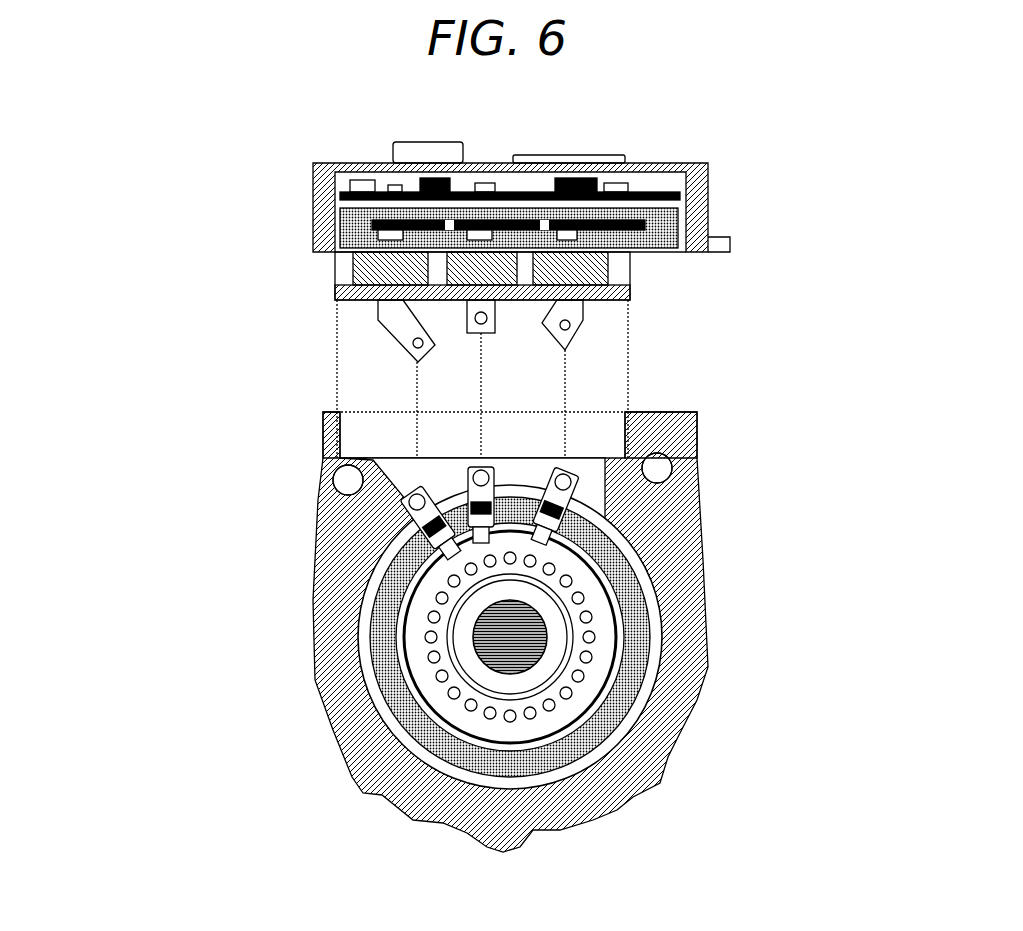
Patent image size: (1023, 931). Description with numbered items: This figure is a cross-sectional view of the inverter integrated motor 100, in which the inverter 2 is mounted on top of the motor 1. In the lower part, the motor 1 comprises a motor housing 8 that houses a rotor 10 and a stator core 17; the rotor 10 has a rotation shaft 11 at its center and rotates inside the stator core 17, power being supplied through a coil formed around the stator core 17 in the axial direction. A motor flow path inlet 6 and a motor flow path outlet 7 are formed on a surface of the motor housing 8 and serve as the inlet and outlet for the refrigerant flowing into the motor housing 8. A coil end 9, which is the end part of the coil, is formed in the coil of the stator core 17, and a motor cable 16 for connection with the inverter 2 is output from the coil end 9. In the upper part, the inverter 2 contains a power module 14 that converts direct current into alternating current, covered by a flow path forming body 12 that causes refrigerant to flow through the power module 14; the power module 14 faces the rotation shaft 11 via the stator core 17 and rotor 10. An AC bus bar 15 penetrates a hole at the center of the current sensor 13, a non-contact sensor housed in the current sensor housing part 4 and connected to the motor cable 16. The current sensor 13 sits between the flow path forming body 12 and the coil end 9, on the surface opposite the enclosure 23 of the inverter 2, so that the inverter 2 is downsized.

The inverter integrated motor 100 is at (185, 113).
The motor 1 is at (620, 576).
The inverter 2 is at (606, 274).
The current sensor housing part 4 is at (364, 430).
The motor flow path inlet 6 is at (657, 470).
The motor flow path outlet 7 is at (343, 480).
The motor housing 8 is at (690, 568).
The coil end 9 is at (611, 637).
The stator core 17 is at (633, 652).
The rotor 10 is at (583, 683).
The rotation shaft 11 is at (517, 655).
The flow path forming body 12 is at (660, 227).
The current sensor 13 is at (335, 263).
The power module 14 is at (582, 225).
The AC bus bar 15 is at (588, 322).
The motor cable 16 is at (566, 482).
The enclosure 23 is at (315, 165).